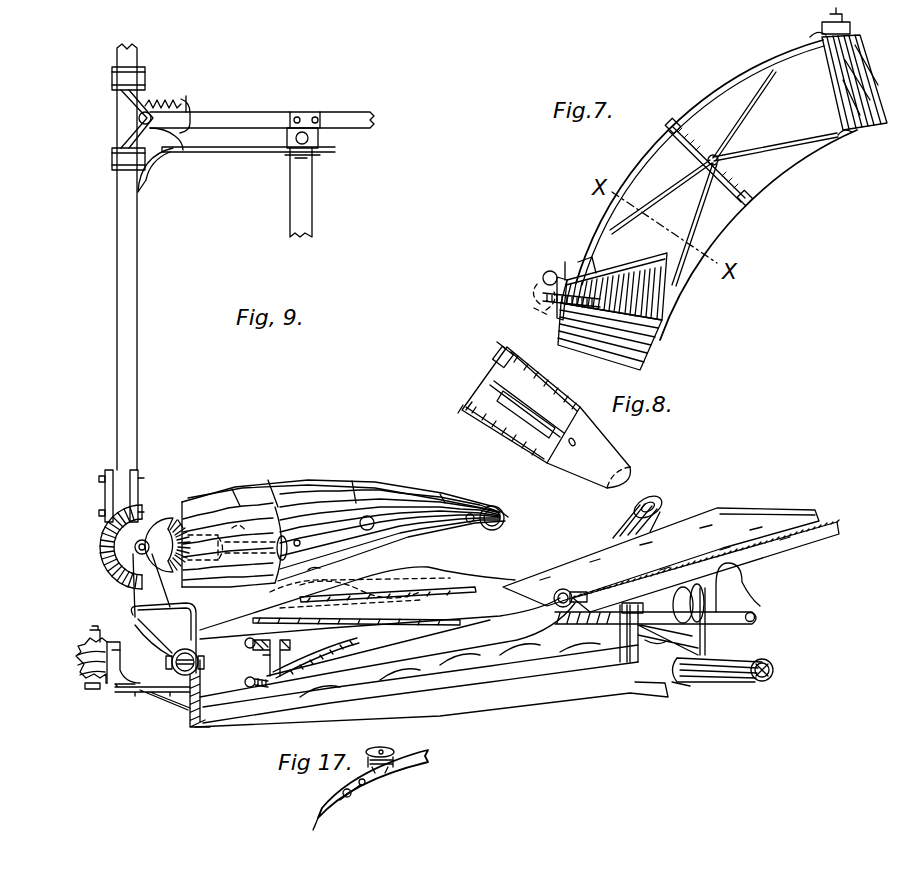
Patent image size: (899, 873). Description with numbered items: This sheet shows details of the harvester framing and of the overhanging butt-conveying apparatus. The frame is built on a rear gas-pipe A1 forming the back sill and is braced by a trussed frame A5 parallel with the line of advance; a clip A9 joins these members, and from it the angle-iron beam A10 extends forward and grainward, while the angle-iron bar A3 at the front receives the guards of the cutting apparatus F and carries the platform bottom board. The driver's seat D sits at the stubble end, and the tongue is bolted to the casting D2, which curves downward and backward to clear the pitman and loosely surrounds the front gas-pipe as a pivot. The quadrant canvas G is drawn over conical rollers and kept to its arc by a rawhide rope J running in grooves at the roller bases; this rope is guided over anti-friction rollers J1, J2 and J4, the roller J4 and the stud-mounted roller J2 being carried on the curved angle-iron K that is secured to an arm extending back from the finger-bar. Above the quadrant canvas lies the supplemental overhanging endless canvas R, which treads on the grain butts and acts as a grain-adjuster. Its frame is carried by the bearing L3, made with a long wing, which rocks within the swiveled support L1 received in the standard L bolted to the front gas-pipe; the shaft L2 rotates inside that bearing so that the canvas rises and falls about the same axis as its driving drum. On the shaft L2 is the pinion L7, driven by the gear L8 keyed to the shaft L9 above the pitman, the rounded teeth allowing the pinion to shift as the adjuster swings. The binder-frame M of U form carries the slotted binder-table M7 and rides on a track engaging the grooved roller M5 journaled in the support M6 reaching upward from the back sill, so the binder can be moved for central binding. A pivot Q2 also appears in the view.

In FIG. 7, the standard L is at (722, 189).
In FIG. 9, the standard L is at (146, 645).
In FIG. 7, the swiveled support L1 is at (543, 277).
In FIG. 9, the swiveled support L1 is at (190, 600).
In FIG. 7, the shaft L2 is at (540, 300).
In FIG. 9, the shaft L2 is at (319, 569).
In FIG. 7, the bearing L3 is at (564, 263).
In FIG. 9, the bearing L3 is at (231, 538).
In FIG. 9, the pinion L7 is at (185, 524).
In FIG. 9, the gear L8 is at (168, 525).
In FIG. 9, the shaft L9 is at (112, 548).
In FIG. 8, the supplemental overhanging endless canvas R is at (473, 428).
In FIG. 9, the supplemental overhanging endless canvas R is at (353, 482).
In FIG. 9, the driver's seat D is at (78, 664).
In FIG. 9, the casting D2 is at (166, 663).
In FIG. 9, the cutting apparatus F is at (130, 691).
In FIG. 9, the angle-iron bar A3 is at (190, 715).
In FIG. 9, the trussed frame A5 is at (380, 600).
In FIG. 9, the quadrant canvas G is at (387, 637).
In FIG. 9, the pivot Q2 is at (568, 590).
In FIG. 9, the binder-table M7 is at (671, 560).
In FIG. 9, the binder-frame M is at (657, 505).
In FIG. 9, the grooved roller M5 is at (657, 593).
In FIG. 9, the support M6 is at (706, 637).
In FIG. 9, the gas-pipe A1 is at (742, 662).
In FIG. 9, the clip A9 is at (692, 685).
In FIG. 9, the angle-iron beam A10 is at (431, 685).
In FIG. 9, the angle-iron K is at (330, 654).
In FIG. 17, the angle-iron K is at (377, 788).
In FIG. 9, the rope J is at (246, 645).
In FIG. 9, the anti-friction roller J4 is at (256, 658).
In FIG. 9, the anti-friction roller J1 is at (252, 687).
In FIG. 17, the anti-friction roller J2 is at (381, 745).